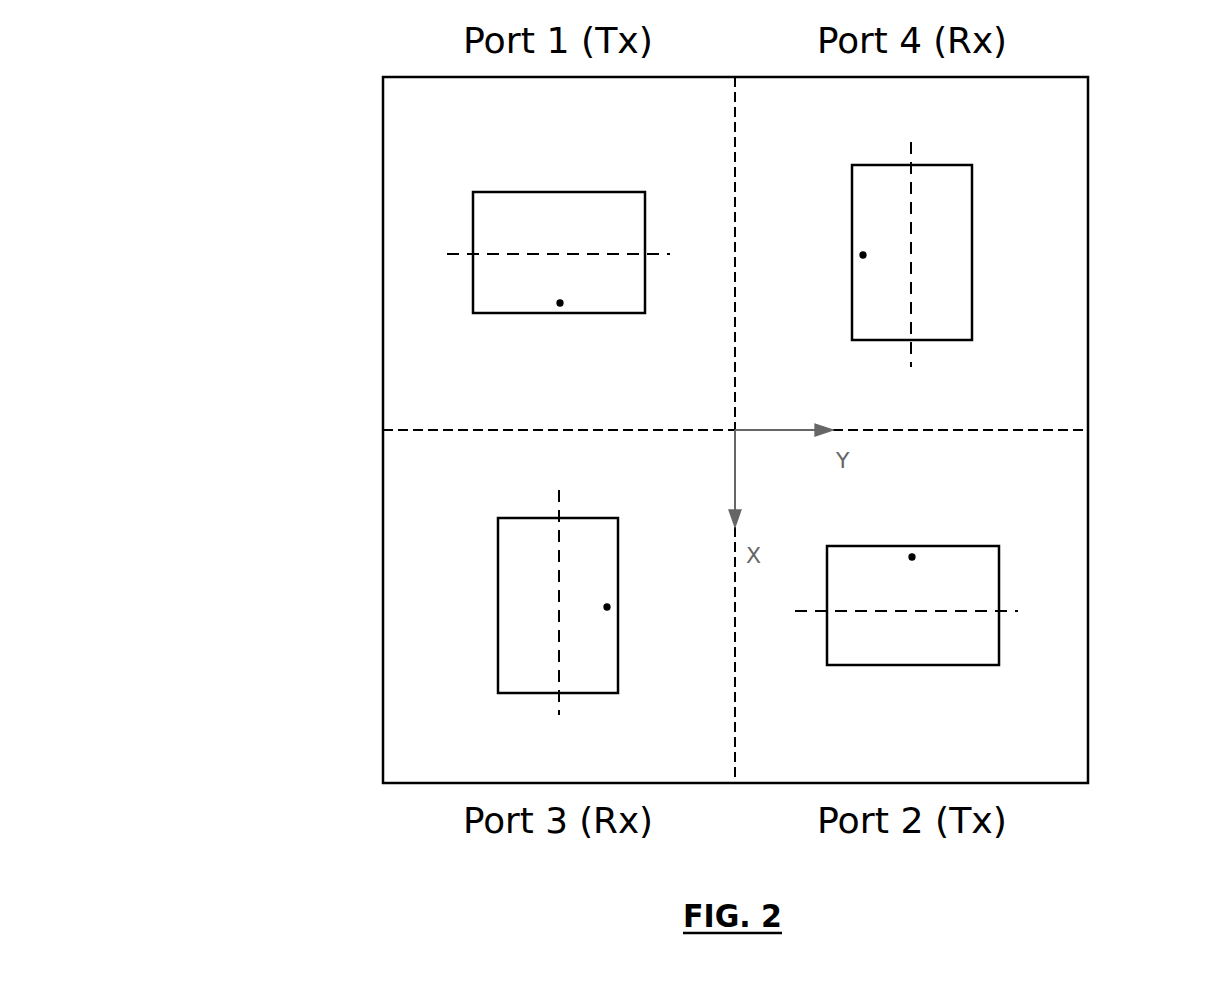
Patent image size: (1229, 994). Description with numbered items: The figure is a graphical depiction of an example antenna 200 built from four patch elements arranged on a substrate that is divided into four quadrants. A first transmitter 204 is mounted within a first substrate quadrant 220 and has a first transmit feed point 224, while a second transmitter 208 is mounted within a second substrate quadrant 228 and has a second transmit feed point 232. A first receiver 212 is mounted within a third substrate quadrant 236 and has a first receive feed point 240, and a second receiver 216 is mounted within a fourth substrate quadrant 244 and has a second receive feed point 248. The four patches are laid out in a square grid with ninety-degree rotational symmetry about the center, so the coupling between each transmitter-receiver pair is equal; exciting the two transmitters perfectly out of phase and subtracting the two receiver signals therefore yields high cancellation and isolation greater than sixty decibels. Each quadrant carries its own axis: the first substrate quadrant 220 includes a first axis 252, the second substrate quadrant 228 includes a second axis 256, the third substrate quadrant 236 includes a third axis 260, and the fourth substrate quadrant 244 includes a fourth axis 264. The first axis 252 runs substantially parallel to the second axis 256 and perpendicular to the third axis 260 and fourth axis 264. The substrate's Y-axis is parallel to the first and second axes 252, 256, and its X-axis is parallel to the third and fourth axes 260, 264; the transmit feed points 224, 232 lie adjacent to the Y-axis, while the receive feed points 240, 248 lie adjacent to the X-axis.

The antenna 200 is at (262, 42).
The first transmitter 204 is at (473, 233).
The second transmitter 208 is at (999, 590).
The first receiver 212 is at (498, 598).
The second receiver 216 is at (972, 232).
The first substrate quadrant 220 is at (383, 155).
The first transmit feed point 224 is at (560, 303).
The second substrate quadrant 228 is at (1088, 497).
The second transmit feed point 232 is at (912, 557).
The third substrate quadrant 236 is at (383, 522).
The first receive feed point 240 is at (607, 607).
The fourth substrate quadrant 244 is at (1088, 143).
The second receive feed point 248 is at (863, 255).
The first axis 252 is at (663, 250).
The second axis 256 is at (803, 613).
The third axis 260 is at (555, 708).
The fourth axis 264 is at (910, 140).